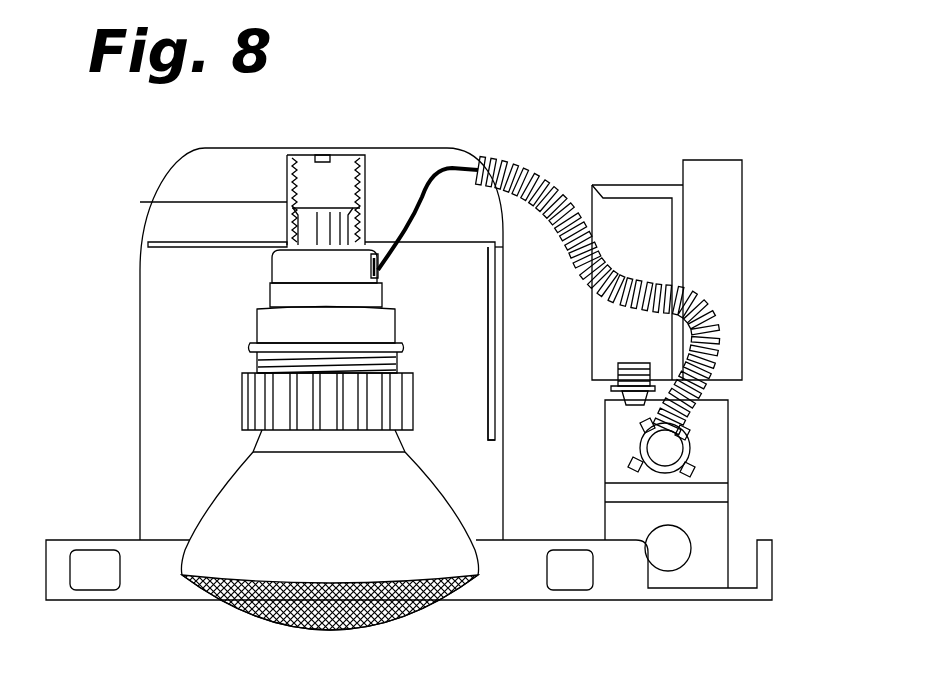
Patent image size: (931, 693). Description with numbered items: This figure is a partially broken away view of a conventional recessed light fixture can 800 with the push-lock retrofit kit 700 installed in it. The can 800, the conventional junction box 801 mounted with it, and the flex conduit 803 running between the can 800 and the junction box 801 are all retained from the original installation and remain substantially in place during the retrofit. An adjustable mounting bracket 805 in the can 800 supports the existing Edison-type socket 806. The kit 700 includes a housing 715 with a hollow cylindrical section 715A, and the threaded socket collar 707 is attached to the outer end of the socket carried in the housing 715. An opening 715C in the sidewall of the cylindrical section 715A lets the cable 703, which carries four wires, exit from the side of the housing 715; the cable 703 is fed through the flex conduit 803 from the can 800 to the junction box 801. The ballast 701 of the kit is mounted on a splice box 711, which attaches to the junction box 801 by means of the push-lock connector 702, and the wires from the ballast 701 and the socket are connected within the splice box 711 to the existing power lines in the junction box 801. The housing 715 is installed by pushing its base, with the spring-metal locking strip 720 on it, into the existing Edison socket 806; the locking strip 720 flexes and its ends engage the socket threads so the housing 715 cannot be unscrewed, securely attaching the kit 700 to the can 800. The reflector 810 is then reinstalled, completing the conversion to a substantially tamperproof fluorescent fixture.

The kit 700 is at (547, 85).
The ballast 701 is at (715, 272).
The push-lock connector 702 is at (612, 372).
The cable 703 is at (477, 170).
The threaded socket collar 707 is at (327, 332).
The splice box 711 is at (650, 203).
The housing 715 is at (230, 267).
The hollow cylindrical section 715A is at (328, 273).
The opening 715C is at (378, 273).
The locking strip 720 is at (330, 208).
The light fixture can 800 is at (140, 462).
The junction box 801 is at (710, 463).
The flex conduit 803 is at (552, 196).
The adjustable mounting bracket 805 is at (490, 403).
The Edison-type socket 806 is at (287, 203).
The reflector 810 is at (272, 545).